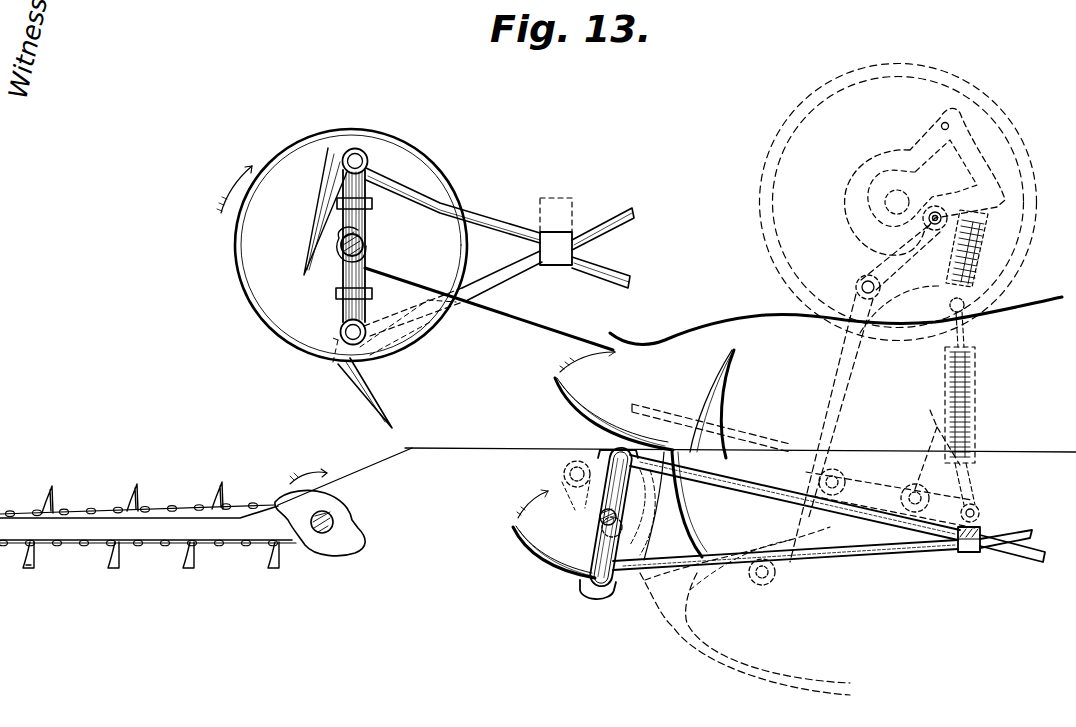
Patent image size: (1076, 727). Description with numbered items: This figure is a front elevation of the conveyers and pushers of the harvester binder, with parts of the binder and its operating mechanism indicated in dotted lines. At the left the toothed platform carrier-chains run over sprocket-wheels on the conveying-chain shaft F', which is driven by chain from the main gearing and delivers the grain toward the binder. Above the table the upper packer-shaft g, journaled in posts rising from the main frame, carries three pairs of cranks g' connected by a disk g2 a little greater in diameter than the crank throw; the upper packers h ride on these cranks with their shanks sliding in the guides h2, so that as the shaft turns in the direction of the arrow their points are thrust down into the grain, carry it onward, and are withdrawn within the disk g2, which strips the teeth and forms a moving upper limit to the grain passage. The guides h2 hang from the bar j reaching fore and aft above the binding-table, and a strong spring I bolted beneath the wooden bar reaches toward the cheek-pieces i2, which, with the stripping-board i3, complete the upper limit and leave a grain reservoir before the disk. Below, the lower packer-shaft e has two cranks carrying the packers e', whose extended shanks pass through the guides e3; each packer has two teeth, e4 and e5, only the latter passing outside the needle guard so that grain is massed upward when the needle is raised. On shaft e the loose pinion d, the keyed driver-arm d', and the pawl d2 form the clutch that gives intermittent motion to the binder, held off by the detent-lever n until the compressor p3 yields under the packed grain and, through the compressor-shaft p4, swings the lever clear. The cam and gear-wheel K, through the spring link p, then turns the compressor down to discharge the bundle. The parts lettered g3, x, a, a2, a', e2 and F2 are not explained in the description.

The upper packer-shaft g is at (350, 246).
The cranks g' is at (452, 227).
The disk g2 is at (450, 183).
The disk wheel g3 is at (286, 318).
The upper packers h is at (612, 222).
The guides h2 is at (556, 248).
The bar j is at (556, 215).
The spring I is at (530, 326).
The cheek-pieces i2 is at (758, 314).
The stripping-board i3 is at (1030, 303).
The cam and gear-wheel K is at (900, 66).
The cam x is at (925, 181).
The lever a is at (868, 384).
The link p is at (980, 340).
The compressor p3 is at (937, 451).
The compressor-shaft p4 is at (905, 482).
The frame bar a2 is at (677, 465).
The frame arm a' is at (331, 465).
The packer tooth e5 is at (572, 409).
The packer tooth e4 is at (732, 396).
The lower claw e2 is at (684, 505).
The detent-lever n is at (711, 436).
The packers e' is at (829, 521).
The guides e3 is at (970, 553).
The pinion d is at (592, 522).
The driver-arm d' is at (558, 481).
The pawl d2 is at (592, 460).
The lower packer-shaft e is at (598, 508).
The conveying-chain shaft F' is at (148, 525).
The conveyor head F2 is at (320, 522).